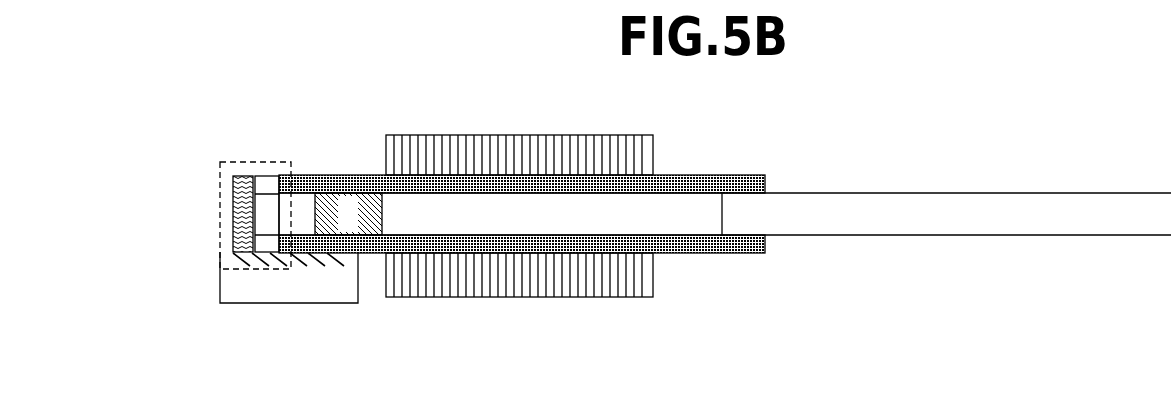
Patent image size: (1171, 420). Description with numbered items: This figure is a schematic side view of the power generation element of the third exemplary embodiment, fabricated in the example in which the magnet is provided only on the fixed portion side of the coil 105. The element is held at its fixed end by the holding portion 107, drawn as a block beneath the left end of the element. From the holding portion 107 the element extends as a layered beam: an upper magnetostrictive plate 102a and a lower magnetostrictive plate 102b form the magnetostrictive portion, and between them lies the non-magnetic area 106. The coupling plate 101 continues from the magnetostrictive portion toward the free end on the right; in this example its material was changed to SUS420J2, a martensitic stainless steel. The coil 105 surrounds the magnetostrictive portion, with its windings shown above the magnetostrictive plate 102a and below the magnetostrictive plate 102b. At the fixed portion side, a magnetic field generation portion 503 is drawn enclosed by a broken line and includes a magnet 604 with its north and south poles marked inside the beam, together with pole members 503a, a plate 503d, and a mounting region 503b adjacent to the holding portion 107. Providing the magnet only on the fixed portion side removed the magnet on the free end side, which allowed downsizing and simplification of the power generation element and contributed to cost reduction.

The coupling plate 101 is at (1018, 205).
The magnetostrictive plate 102a is at (745, 186).
The magnetostrictive plate 102b is at (744, 254).
The coil 105 is at (510, 134).
The non-magnetic area 106 is at (479, 222).
The holding portion 107 is at (328, 295).
The magnetic sensor unit 503 is at (303, 110).
The magnetic pole members (SN/NS) 503a is at (252, 177).
The mounting portion 503b is at (242, 258).
The magnetic detection element 503d is at (233, 205).
The permanent magnet 604 is at (335, 198).